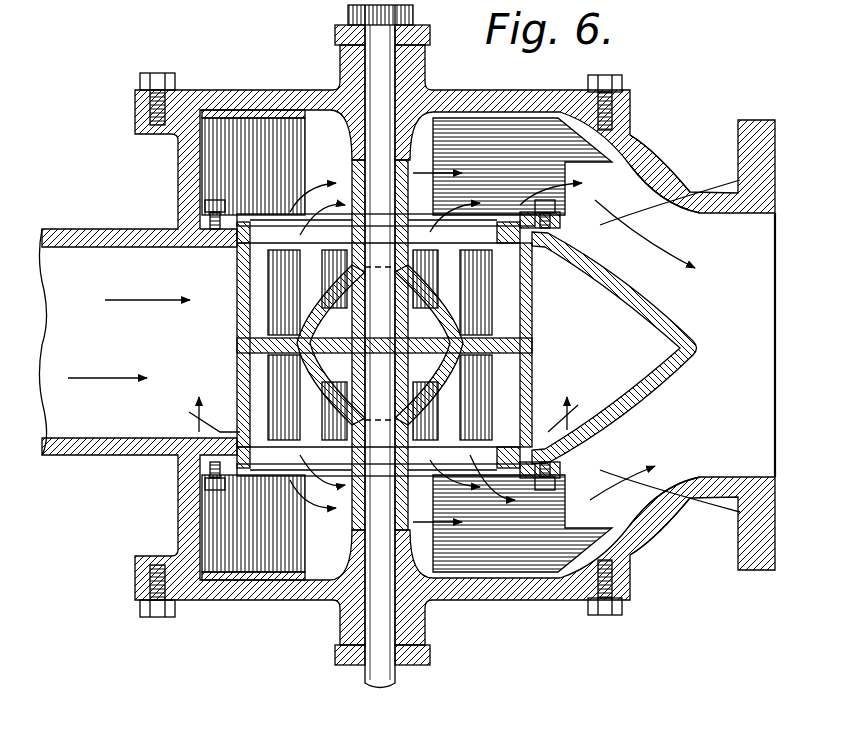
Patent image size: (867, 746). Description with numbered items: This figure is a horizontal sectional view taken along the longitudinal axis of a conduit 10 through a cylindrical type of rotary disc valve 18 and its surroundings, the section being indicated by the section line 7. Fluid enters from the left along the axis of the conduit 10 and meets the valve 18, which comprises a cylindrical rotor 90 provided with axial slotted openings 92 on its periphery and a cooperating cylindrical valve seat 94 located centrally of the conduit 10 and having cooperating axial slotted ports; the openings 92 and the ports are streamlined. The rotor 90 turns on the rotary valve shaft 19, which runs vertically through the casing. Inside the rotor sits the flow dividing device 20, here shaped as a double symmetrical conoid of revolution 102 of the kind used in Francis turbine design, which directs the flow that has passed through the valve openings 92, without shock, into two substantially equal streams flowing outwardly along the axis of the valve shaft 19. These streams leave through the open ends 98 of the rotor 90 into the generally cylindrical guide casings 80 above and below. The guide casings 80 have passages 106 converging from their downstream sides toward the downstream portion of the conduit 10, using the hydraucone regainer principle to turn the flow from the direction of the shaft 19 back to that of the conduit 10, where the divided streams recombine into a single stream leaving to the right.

The section line 7- 7 is at (380, 413).
The conduit 10 is at (757, 462).
The valve 18 is at (548, 456).
The rotary valve shaft 19 is at (385, 664).
The flow dividing device 20 is at (392, 345).
The guide casings 80 is at (485, 158).
The cylindrical rotor 90 is at (500, 388).
The axial slotted openings 92 is at (290, 290).
The cylindrical valve seat 94 is at (240, 377).
The ends of the cylindrical rotor 98 is at (470, 225).
The double symmetrical conoid of revolution 102 is at (500, 290).
The passages 106 is at (625, 190).